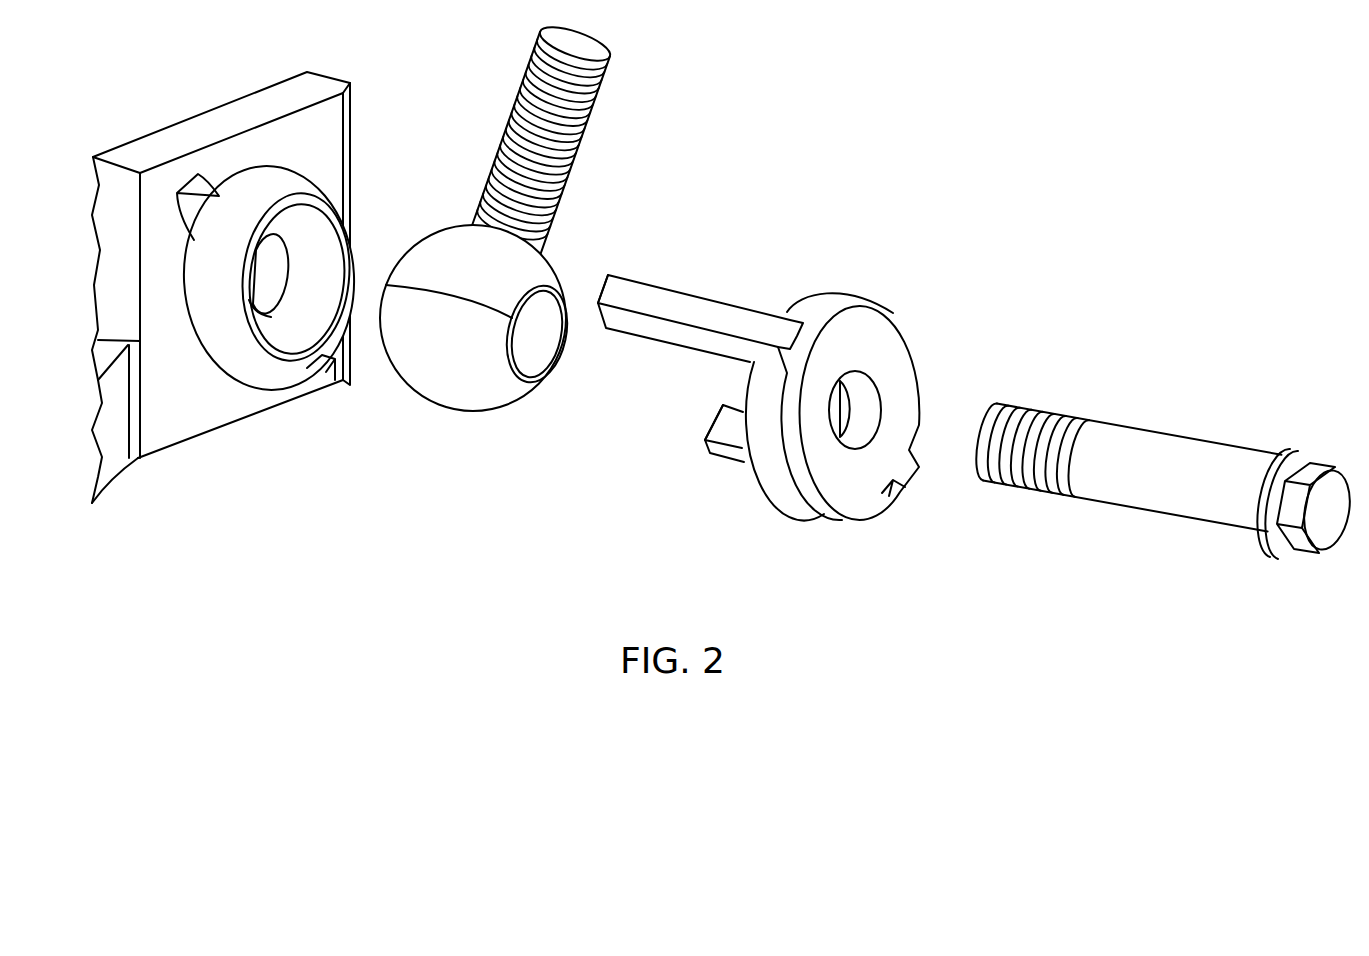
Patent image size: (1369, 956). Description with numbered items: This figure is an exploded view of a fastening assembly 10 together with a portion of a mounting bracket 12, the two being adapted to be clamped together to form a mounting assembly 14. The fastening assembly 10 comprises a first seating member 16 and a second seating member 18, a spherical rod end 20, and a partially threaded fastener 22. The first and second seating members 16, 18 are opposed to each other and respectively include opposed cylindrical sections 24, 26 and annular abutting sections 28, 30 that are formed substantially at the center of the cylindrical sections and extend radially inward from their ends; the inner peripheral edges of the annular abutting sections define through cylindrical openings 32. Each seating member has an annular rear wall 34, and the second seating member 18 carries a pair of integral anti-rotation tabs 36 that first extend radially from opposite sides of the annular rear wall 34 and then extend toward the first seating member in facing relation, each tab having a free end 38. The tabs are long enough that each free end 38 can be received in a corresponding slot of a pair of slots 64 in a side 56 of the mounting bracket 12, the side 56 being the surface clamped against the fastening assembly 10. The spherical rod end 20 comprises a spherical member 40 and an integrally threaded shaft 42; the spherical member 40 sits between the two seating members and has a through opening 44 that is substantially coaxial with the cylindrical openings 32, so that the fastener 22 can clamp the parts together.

The fastening assembly 10 is at (940, 535).
The mounting bracket 12 is at (228, 112).
The mounting assembly 14 is at (888, 658).
The first seating member 16 is at (358, 224).
The second seating member 18 is at (897, 302).
The spherical rod end 20 is at (623, 77).
The partially threaded fastener 22 is at (1173, 447).
The cylindrical section 24 is at (287, 168).
The cylindrical section 26 is at (827, 288).
The annular abutting section 28 is at (310, 267).
The annular abutting section 30 is at (880, 412).
The cylindrical opening 32 is at (266, 300).
The annular rear wall 34 is at (852, 487).
The anti-rotation tab 36 is at (710, 297).
The free end 38 is at (603, 272).
The spherical member 40 is at (470, 413).
The integrally threaded shaft 42 is at (580, 143).
The through opening 44 is at (560, 357).
The side 56 is at (183, 430).
The slot 64 is at (187, 177).